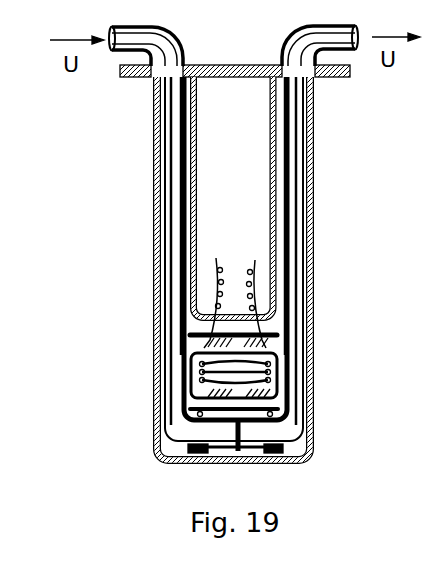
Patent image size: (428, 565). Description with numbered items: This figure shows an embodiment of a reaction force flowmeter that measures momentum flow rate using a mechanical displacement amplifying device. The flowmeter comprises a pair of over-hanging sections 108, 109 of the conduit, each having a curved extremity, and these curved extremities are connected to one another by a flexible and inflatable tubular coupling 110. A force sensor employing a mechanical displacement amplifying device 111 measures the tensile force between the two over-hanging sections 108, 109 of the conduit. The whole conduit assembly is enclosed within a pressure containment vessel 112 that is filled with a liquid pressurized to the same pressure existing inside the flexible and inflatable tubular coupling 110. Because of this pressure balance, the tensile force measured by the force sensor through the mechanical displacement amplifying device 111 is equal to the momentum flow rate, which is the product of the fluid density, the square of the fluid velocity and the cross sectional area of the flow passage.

The over-hanging section of the conduit 108 is at (177, 276).
The over-hanging section of the conduit 109 is at (290, 280).
The flexible and inflatable tubular coupling 110 is at (208, 458).
The mechanical displacement amplifying device 111 is at (274, 397).
The pressure containment vessel 112 is at (289, 458).